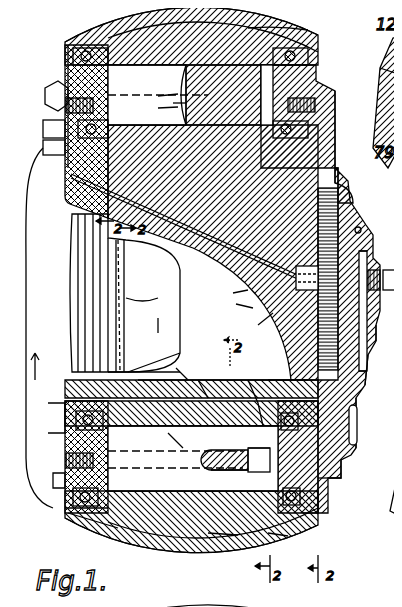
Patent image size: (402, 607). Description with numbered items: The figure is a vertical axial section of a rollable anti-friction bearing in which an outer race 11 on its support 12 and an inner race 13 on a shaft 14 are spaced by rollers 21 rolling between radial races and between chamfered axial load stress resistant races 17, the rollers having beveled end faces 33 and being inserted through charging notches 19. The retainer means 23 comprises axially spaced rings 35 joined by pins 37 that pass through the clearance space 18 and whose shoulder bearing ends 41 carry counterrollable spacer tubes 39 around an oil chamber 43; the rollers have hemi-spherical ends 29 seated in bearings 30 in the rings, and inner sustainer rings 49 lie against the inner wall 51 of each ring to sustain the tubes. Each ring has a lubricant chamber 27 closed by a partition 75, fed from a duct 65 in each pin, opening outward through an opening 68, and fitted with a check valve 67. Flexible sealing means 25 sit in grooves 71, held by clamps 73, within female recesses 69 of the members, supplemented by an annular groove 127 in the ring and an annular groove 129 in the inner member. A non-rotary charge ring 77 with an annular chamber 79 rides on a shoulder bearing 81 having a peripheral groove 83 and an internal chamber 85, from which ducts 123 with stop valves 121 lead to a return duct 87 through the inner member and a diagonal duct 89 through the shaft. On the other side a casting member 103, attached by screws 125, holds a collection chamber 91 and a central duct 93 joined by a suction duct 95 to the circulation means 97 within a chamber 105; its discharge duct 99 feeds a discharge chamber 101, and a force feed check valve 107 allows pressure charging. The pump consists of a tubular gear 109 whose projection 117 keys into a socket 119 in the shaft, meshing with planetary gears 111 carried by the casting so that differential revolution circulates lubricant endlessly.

The outer race 11 is at (225, 530).
The support 12 is at (300, 518).
The inner race 13 is at (209, 378).
The shaft 14 is at (158, 349).
The axial load stress resistant races 17 is at (193, 460).
The retainer clearance space 18 is at (115, 430).
The charging notches 19 is at (147, 95).
The rollable members 21 is at (170, 195).
The retainer means 23 is at (60, 500).
The sealing means 25 is at (70, 512).
The lubricant chamber 27 is at (46, 470).
The hemi-spherical bearing ends 29 is at (155, 94).
The bearings 30 is at (154, 108).
The axial stress transmission faces 33 is at (147, 190).
The rings 35 is at (312, 493).
The pins 37 is at (189, 471).
The spacer tubes 39 is at (189, 378).
The shoulder bearing ends 41 is at (250, 471).
The oil chamber 43 is at (228, 482).
The inner sustainer rings 49 is at (142, 294).
The inner wall 51 is at (381, 84).
The lubricant supply duct 65 is at (172, 437).
The check valve 67 is at (40, 82).
The opening 68 is at (60, 58).
The female recesses 69 is at (304, 510).
The grooves 71 is at (300, 47).
The annular clamps 73 is at (285, 530).
The partition 75 is at (250, 391).
The lubricant charge ring 77 is at (64, 45).
The annular chamber 79 is at (57, 97).
The shoulder bearing 81 is at (38, 272).
The peripheral groove 83 is at (38, 348).
The internal chamber 85 is at (57, 398).
The lubricant return duct 87 is at (181, 365).
The diagonal return duct 89 is at (190, 266).
The return collection chamber 91 is at (348, 378).
The central return duct 93 is at (250, 317).
The suction duct 95 is at (365, 325).
The fluid circulation means 97 is at (362, 295).
The discharge duct 99 is at (343, 424).
The lubricant discharge chamber 101 is at (334, 456).
The casting member 103 is at (352, 220).
The chamber 105 is at (355, 352).
The force feed check valve 107 is at (390, 258).
The gear 109 is at (368, 248).
The planetary gears 111 is at (333, 195).
The projection 117 is at (233, 308).
The socket 119 is at (222, 286).
The stop valves 121 is at (40, 139).
The ducts 123 is at (40, 124).
The screws 125 is at (320, 472).
The annular groove 127 is at (300, 22).
The annular groove 129 is at (130, 378).